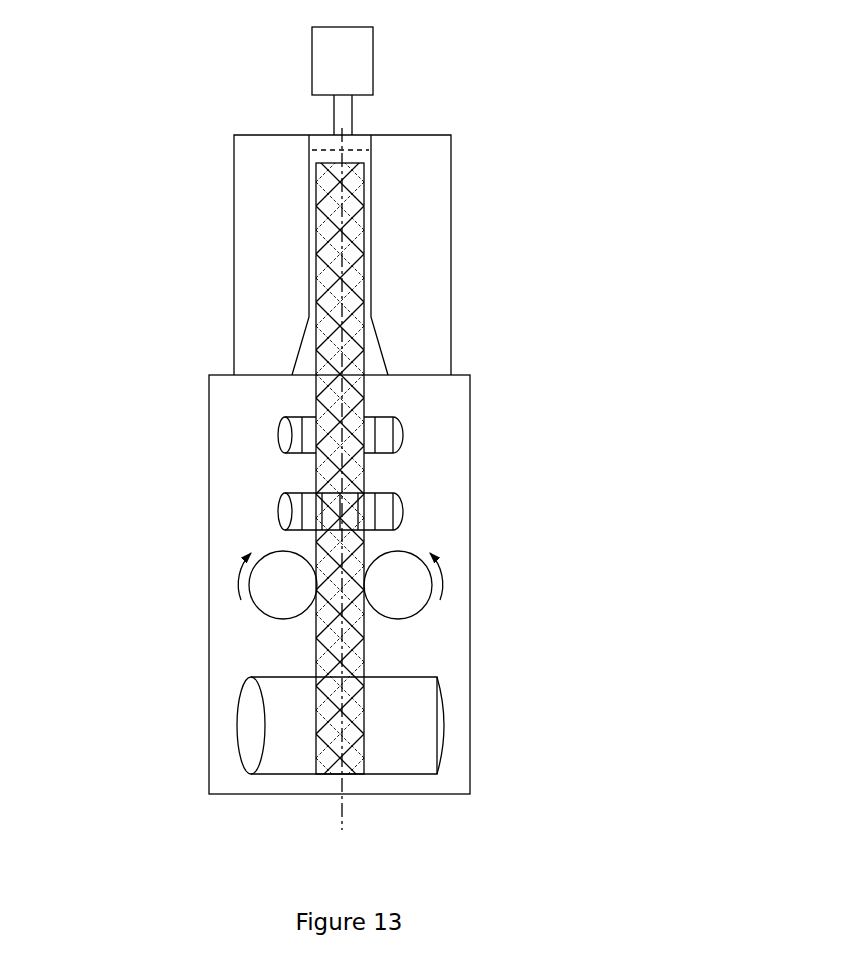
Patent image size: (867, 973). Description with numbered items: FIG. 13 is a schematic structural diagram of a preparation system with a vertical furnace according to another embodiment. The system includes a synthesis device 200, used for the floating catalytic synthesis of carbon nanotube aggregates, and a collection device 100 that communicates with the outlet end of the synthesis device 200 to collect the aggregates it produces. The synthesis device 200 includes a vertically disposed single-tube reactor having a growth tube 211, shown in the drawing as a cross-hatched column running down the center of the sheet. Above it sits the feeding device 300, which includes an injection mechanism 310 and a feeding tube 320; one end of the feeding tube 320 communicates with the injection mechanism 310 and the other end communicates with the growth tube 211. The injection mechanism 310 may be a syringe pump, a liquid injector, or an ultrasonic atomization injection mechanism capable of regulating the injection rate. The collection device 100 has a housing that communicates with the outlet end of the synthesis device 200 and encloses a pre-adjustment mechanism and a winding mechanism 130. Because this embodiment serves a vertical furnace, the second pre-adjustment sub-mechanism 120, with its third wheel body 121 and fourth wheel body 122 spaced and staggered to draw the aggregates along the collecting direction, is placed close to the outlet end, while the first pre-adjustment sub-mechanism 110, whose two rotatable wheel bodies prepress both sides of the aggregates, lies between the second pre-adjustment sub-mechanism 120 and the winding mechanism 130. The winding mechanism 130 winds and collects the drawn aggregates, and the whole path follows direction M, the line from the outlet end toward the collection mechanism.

The collection device 100 is at (482, 630).
The first pre-adjustment sub-mechanism 110 is at (229, 580).
The second pre-adjustment sub-mechanism 120 is at (258, 437).
The third wheel body 121 is at (404, 431).
The fourth wheel body 122 is at (404, 509).
The winding mechanism 130 is at (225, 728).
The synthesis device 200 is at (474, 268).
The growth tube 211 is at (309, 210).
The feeding device 300 is at (430, 86).
The injection mechanism 310 is at (312, 41).
The feeding tube 320 is at (334, 115).
The direction M is at (340, 494).